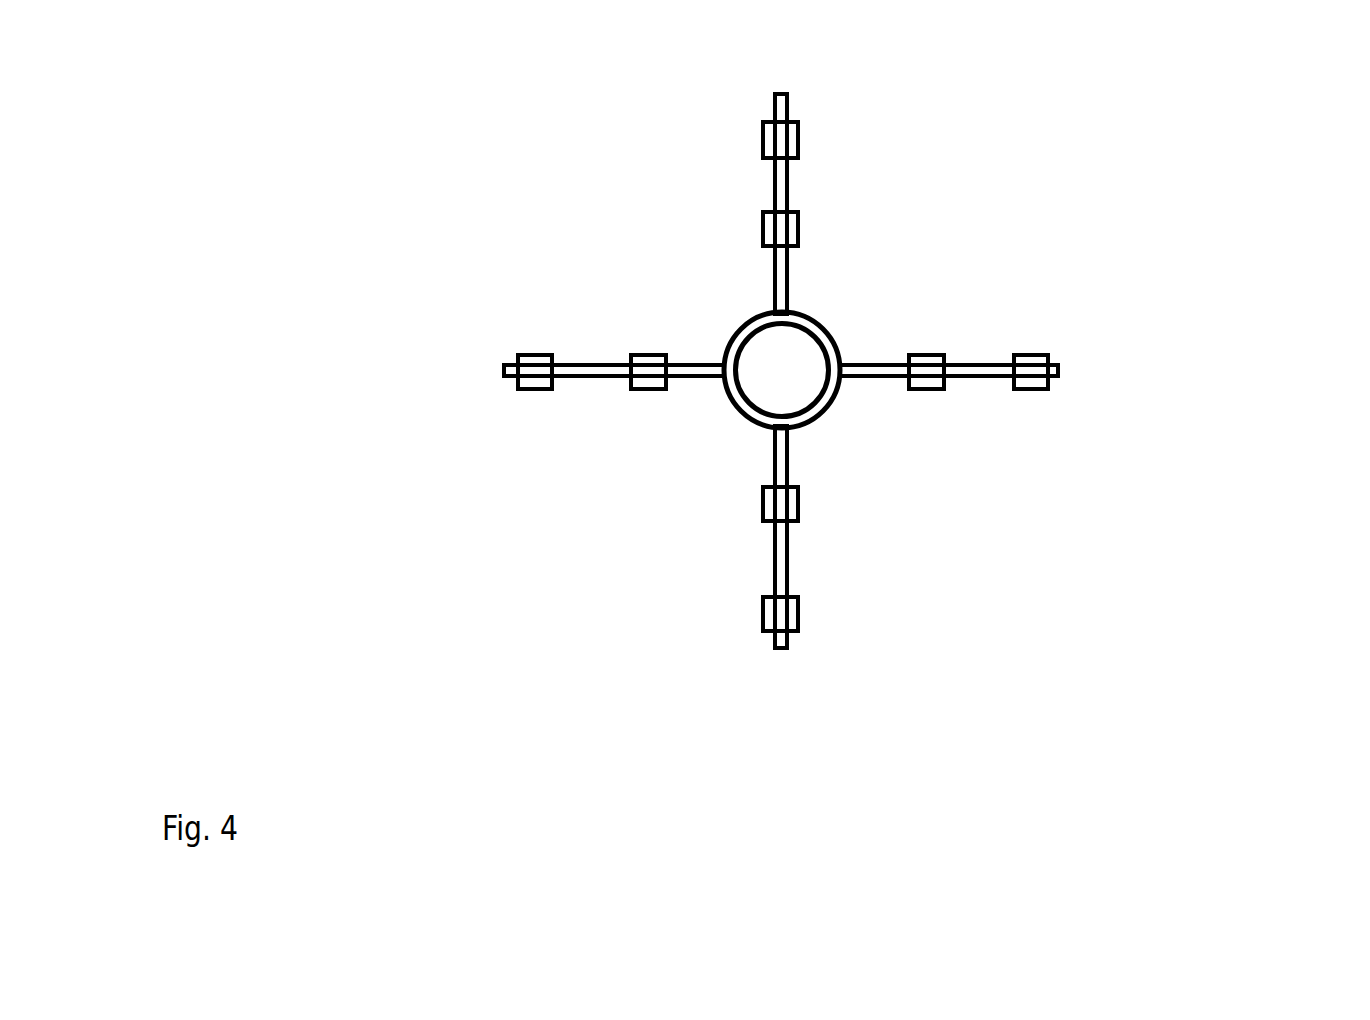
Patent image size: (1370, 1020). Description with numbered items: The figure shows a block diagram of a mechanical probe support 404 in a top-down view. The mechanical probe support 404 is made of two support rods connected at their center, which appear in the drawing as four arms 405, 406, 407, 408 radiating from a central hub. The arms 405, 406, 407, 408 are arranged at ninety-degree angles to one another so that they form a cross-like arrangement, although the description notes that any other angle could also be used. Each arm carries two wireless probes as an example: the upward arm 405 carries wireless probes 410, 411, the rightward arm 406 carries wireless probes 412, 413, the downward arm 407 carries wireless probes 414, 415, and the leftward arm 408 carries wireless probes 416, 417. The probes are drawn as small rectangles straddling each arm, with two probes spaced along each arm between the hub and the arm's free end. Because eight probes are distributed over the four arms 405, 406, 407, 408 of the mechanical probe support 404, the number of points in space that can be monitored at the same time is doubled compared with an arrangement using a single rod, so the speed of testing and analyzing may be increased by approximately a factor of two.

The mechanical probe support 404 is at (827, 410).
The arm 405 is at (790, 100).
The arm 406 is at (1062, 366).
The arm 407 is at (783, 558).
The arm 408 is at (583, 378).
The wireless probe 410 is at (797, 141).
The wireless probe 411 is at (797, 237).
The wireless probe 412 is at (928, 352).
The wireless probe 413 is at (1025, 352).
The wireless probe 414 is at (767, 508).
The wireless probe 415 is at (767, 602).
The wireless probe 416 is at (543, 357).
The eighth element 417 is at (644, 353).